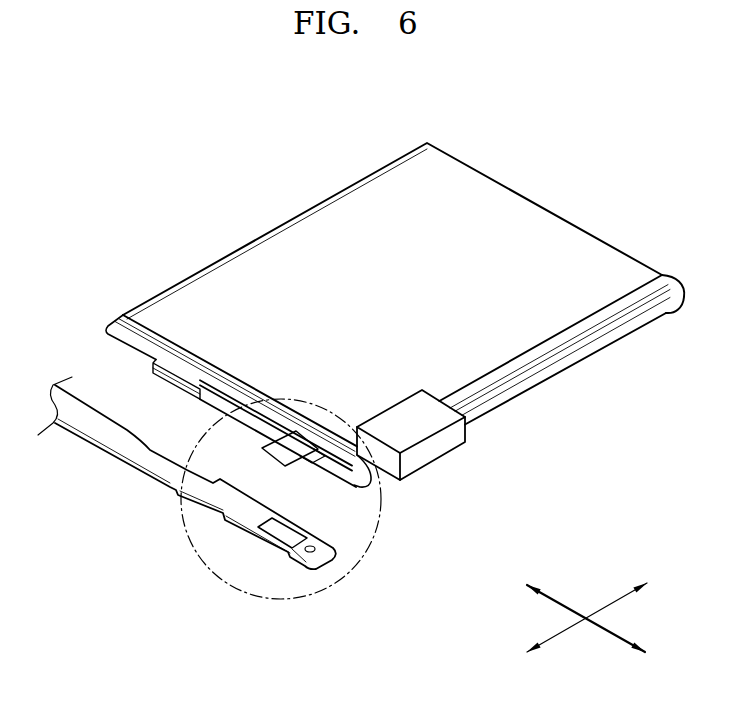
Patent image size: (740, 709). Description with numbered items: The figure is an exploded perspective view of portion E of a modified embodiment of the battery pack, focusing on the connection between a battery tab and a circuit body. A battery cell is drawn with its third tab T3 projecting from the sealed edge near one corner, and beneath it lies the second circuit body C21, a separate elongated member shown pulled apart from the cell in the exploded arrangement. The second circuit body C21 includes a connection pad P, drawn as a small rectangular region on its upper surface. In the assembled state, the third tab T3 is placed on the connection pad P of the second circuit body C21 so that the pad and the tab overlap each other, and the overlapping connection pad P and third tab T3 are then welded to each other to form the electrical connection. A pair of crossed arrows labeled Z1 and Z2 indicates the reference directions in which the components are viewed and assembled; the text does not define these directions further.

The third tab T3 is at (283, 452).
The second circuit body C21 is at (320, 565).
The connection pad P is at (280, 537).
The portion E is at (388, 527).
The first direction Z1 is at (603, 609).
The second direction Z2 is at (603, 629).